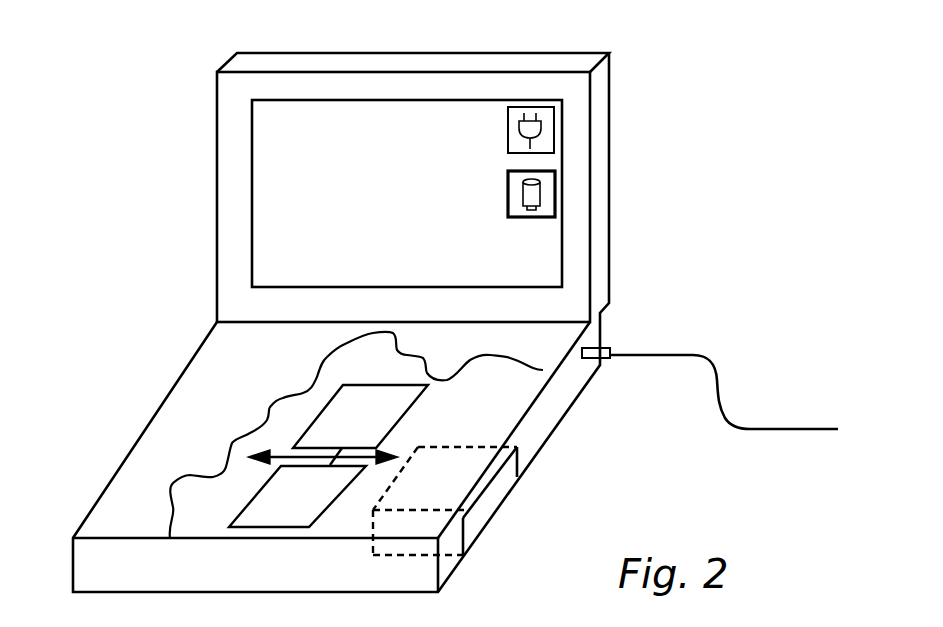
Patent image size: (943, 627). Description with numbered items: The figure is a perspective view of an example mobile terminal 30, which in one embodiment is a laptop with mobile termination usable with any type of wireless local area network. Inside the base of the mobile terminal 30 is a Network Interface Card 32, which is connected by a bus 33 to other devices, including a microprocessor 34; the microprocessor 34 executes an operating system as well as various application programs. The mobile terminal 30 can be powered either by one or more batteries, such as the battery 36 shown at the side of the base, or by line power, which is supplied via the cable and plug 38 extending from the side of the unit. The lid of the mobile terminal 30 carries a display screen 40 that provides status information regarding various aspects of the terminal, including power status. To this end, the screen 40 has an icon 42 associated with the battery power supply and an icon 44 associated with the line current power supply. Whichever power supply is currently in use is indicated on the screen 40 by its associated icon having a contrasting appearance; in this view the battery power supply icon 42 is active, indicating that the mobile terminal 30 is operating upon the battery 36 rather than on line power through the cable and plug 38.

The mobile terminal 30 is at (128, 105).
The display screen 40 is at (410, 100).
The line current power supply icon 44 is at (555, 132).
The battery power supply icon 42 is at (555, 188).
The cable and plug 38 is at (608, 348).
The Network Interface Card 32 is at (408, 413).
The bus 33 is at (292, 456).
The microprocessor 34 is at (282, 528).
The battery 36 is at (490, 500).